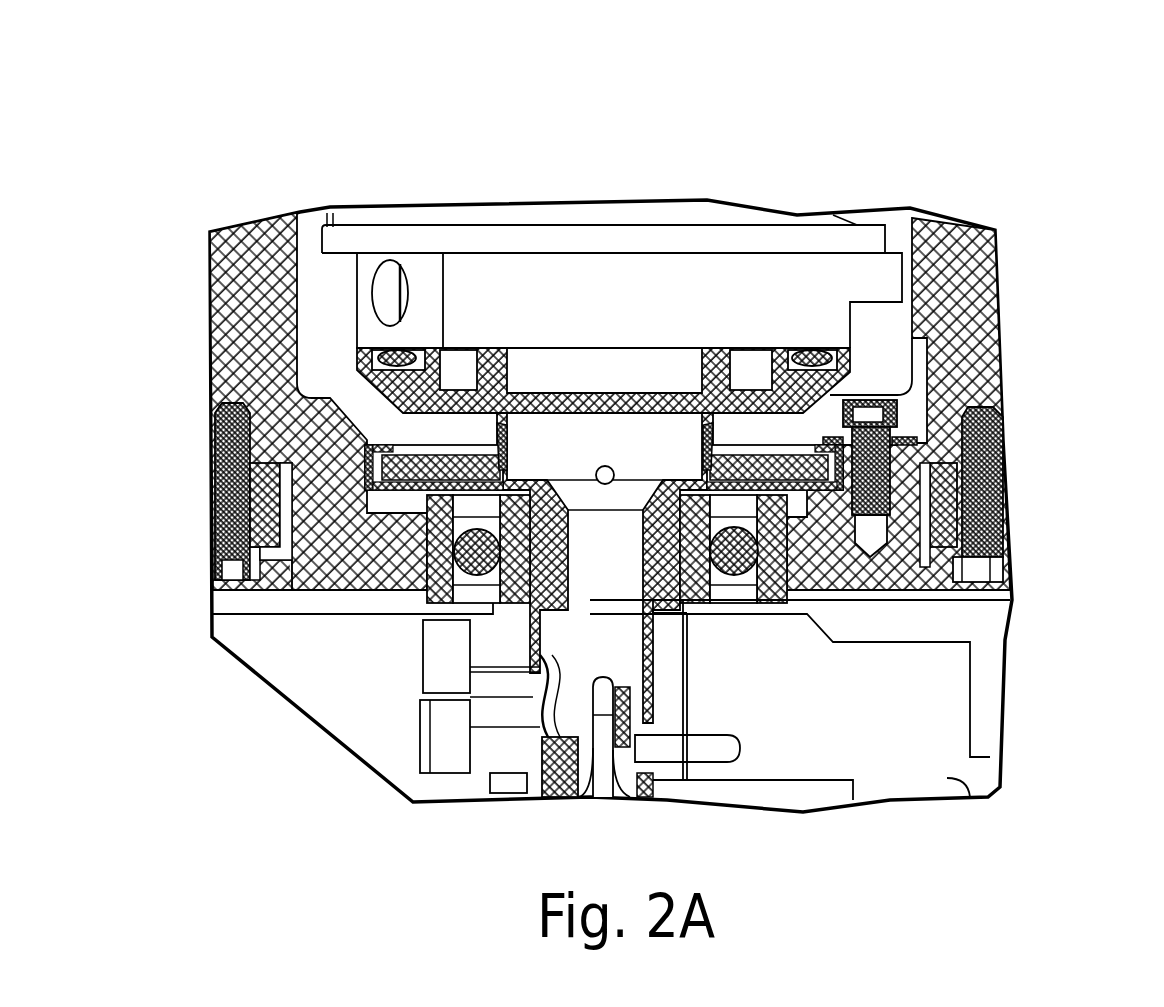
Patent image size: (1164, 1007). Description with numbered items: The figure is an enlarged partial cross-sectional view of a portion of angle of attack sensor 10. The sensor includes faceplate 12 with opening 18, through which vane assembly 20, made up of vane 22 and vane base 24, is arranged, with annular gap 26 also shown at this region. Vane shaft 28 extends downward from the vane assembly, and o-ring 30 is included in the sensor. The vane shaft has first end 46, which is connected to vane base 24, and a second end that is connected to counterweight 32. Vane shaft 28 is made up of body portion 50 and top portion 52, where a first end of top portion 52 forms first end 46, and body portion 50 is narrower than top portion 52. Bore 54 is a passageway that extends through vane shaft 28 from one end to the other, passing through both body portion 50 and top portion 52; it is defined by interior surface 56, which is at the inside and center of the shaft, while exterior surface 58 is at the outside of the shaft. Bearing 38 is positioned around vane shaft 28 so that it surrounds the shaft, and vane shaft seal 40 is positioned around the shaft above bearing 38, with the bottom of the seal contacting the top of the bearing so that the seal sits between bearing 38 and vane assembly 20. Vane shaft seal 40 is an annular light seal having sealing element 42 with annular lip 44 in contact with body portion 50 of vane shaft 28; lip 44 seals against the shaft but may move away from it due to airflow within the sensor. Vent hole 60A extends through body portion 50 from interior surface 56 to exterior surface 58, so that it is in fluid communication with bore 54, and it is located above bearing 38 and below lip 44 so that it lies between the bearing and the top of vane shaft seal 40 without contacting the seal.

The angle of attack sensor 10 is at (205, 120).
The faceplate 12 is at (238, 275).
The opening 18 is at (300, 205).
The vane assembly 20 is at (493, 170).
The vane 22 is at (598, 222).
The vane base 24 is at (765, 290).
The annular gap 26 is at (900, 236).
The vane shaft 28 is at (610, 622).
The o-ring 30 is at (378, 358).
The counterweight 32 is at (935, 725).
The bearing 38 is at (470, 556).
The vane shaft seal 40 is at (400, 455).
The sealing element 42 is at (700, 488).
The lip 44 is at (707, 443).
The first end 46 is at (778, 347).
The body portion 50 is at (552, 568).
The top portion 52 is at (413, 387).
The bore 54 is at (622, 657).
The interior surface 56 is at (540, 675).
The exterior surface 58 is at (733, 525).
The vent hole 60A is at (613, 478).